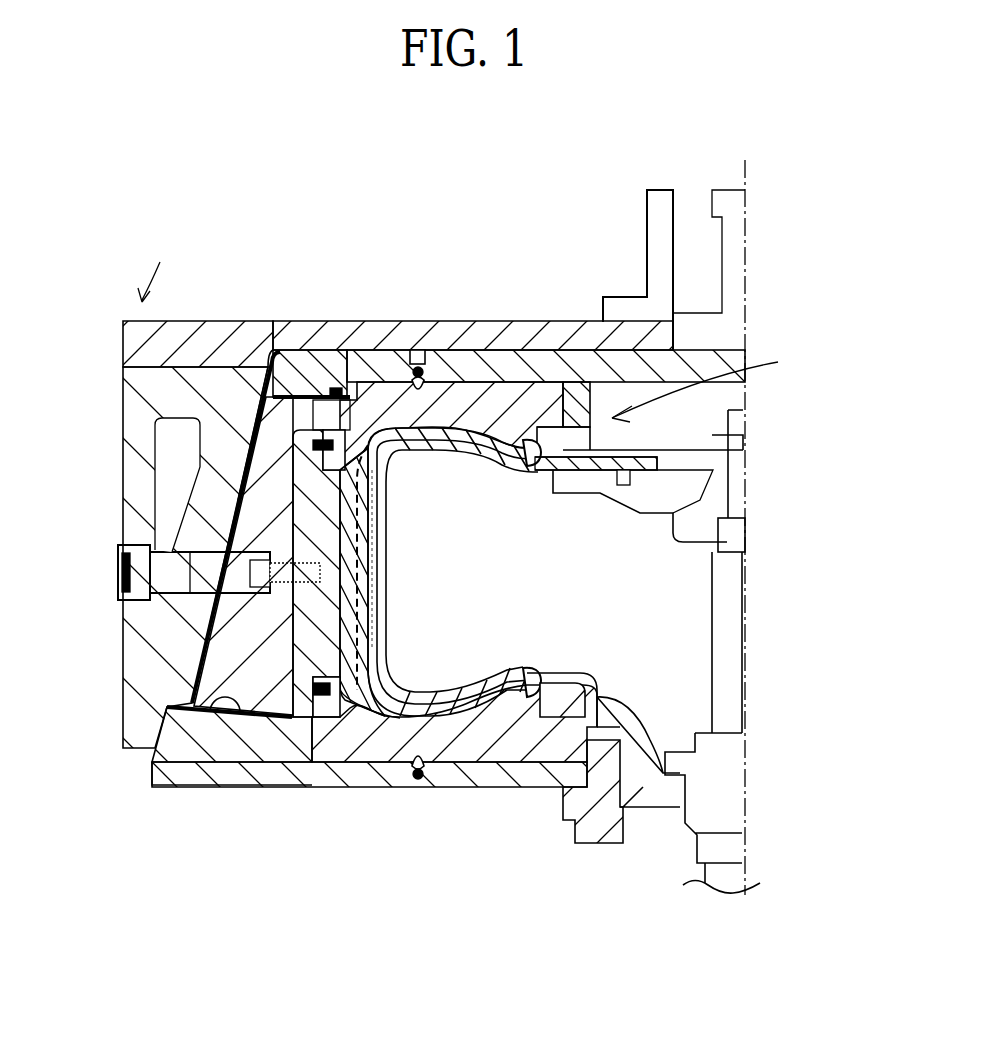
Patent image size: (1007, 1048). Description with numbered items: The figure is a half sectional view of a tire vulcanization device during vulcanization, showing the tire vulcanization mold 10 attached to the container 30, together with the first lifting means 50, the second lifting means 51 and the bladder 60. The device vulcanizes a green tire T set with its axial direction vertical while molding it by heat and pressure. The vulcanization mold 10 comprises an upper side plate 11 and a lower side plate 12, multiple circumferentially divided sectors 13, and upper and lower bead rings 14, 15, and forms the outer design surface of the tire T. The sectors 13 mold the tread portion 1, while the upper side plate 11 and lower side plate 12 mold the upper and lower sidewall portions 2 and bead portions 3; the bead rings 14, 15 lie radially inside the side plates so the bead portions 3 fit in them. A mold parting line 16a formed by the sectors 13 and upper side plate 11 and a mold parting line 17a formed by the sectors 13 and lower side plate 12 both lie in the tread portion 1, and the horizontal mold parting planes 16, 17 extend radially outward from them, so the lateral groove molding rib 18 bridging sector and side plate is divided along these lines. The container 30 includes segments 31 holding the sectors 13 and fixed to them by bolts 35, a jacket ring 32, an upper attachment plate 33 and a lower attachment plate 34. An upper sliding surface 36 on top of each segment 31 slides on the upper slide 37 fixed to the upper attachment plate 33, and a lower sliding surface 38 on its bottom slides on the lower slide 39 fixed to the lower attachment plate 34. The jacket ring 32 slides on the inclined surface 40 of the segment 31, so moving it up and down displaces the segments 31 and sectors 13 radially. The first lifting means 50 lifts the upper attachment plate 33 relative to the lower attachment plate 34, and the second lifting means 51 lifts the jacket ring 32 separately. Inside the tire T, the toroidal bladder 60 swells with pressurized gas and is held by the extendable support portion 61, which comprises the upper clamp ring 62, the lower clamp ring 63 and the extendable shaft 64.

The tread portion 1 is at (367, 575).
The sidewall portion 2 is at (437, 440).
The bead portion 3 is at (530, 455).
The tire T is at (483, 440).
The tire vulcanization mold 10 is at (713, 382).
The upper side plate 11 is at (497, 397).
The lower side plate 12 is at (480, 747).
The sectors 13 is at (313, 633).
The upper bead ring 14 is at (562, 400).
The lower bead ring 15 is at (587, 690).
The mold parting plane 16 is at (330, 462).
The mold parting line 16a is at (383, 503).
The mold parting plane 17 is at (340, 680).
The mold parting line 17a is at (343, 673).
The lateral groove molding rib 18 is at (380, 613).
The container 30 is at (159, 264).
The segments 31 is at (217, 657).
The jacket ring 32 is at (137, 417).
The upper attachment plate 33 is at (453, 360).
The lower attachment plate 34 is at (535, 787).
The bolts 35 is at (140, 522).
The upper sliding surface 36 is at (287, 397).
The upper slide 37 is at (333, 413).
The lower sliding surface 38 is at (247, 787).
The lower slide 39 is at (227, 703).
The inclined surface 40 is at (200, 610).
The first lifting means 50 is at (735, 268).
The second lifting means 51 is at (652, 253).
The bladder 60 is at (590, 470).
The extendable support portion 61 is at (727, 807).
The upper clamp ring 62 is at (700, 507).
The lower clamp ring 63 is at (648, 787).
The extendable shaft 64 is at (732, 620).